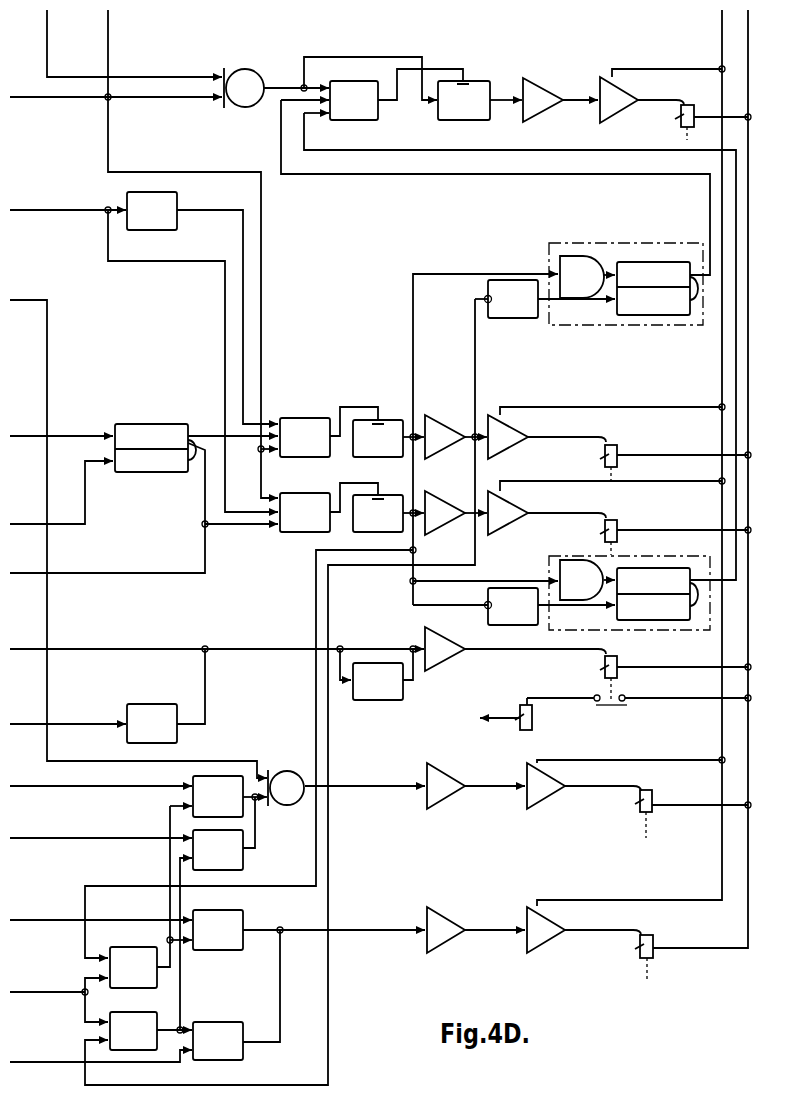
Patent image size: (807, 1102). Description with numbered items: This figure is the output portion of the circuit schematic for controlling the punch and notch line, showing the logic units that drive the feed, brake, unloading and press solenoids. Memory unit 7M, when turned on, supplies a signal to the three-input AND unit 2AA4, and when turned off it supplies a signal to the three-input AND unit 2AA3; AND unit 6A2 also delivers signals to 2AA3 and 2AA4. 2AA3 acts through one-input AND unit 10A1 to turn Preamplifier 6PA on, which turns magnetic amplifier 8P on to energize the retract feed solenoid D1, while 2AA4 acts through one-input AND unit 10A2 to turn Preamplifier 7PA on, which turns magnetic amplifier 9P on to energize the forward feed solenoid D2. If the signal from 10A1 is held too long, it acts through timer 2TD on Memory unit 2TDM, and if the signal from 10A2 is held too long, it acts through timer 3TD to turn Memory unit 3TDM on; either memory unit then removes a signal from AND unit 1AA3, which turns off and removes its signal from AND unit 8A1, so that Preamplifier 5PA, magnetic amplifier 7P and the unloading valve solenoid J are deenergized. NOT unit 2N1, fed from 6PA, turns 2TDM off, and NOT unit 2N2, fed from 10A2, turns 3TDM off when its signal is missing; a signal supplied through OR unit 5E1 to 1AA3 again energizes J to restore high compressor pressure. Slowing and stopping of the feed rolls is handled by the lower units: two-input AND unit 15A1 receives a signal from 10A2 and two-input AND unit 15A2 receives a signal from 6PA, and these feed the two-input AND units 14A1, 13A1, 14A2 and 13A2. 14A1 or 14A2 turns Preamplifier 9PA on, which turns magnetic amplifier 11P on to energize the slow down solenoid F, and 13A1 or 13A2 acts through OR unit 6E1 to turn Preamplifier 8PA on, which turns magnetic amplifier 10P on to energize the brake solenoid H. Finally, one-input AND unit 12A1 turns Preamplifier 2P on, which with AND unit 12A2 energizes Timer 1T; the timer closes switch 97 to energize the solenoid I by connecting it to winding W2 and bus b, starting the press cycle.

The OR unit 5E1 is at (244, 88).
The AND unit 1AA3 is at (354, 100).
The AND unit 8A1 is at (464, 100).
The Preamplifier 5PA is at (547, 112).
The magnetic amplifier 7P is at (619, 100).
The unloading valve solenoid J is at (684, 98).
The bus b is at (748, 80).
The AND unit 6A2 is at (152, 211).
The timer 2TD is at (582, 277).
The Memory unit 2TDM is at (657, 288).
The NOT unit 2N1 is at (513, 299).
The Memory unit 7M is at (155, 448).
The three-input AND unit 2AA3 is at (305, 437).
The one-input AND unit 10A1 is at (378, 438).
The Preamplifier 6PA is at (450, 450).
The magnetic amplifier 8P is at (508, 437).
The retract feed solenoid D1 is at (612, 437).
The three-input AND unit 2AA4 is at (305, 512).
The one-input AND unit 10A2 is at (378, 513).
The Preamplifier 7PA is at (450, 526).
The magnetic amplifier 9P is at (508, 513).
The forward feed solenoid D2 is at (612, 513).
The timer 3TD is at (581, 580).
The Memory unit 3TDM is at (657, 594).
The NOT unit 2N2 is at (513, 606).
The Preamplifier 2P is at (445, 649).
The AND unit 12A2 is at (378, 681).
The Timer 1T is at (612, 649).
The switch 97 is at (620, 693).
The solenoid I is at (532, 722).
The winding W2 is at (480, 722).
The one-input AND unit 12A1 is at (152, 723).
The two-input AND unit 13A1 is at (218, 796).
The two-input AND unit 13A2 is at (218, 850).
The OR unit 6E1 is at (286, 788).
The Preamplifier 8PA is at (452, 799).
The magnetic amplifier 10P is at (552, 799).
The brake solenoid H is at (647, 786).
The two-input AND unit 14A1 is at (218, 930).
The two-input AND unit 15A1 is at (133, 967).
The two-input AND unit 15A2 is at (133, 1031).
The two-input AND unit 14A2 is at (218, 1041).
The Preamplifier 9PA is at (452, 943).
The magnetic amplifier 11P is at (552, 943).
The slow down solenoid F is at (648, 930).